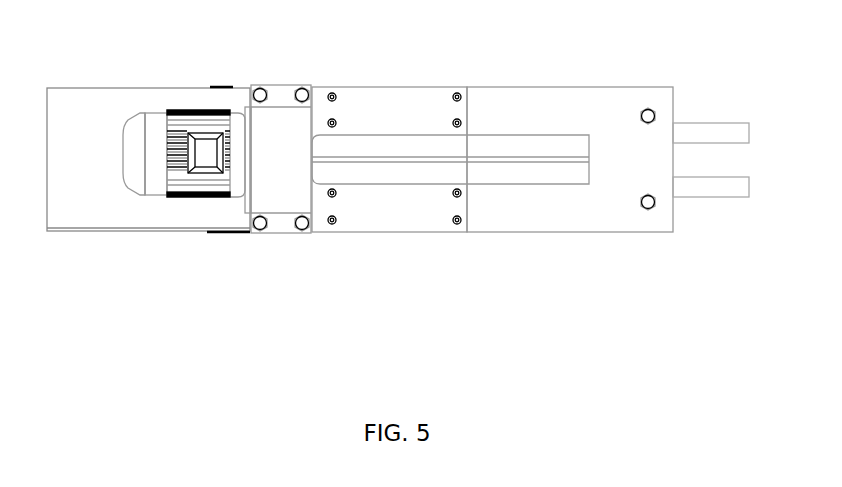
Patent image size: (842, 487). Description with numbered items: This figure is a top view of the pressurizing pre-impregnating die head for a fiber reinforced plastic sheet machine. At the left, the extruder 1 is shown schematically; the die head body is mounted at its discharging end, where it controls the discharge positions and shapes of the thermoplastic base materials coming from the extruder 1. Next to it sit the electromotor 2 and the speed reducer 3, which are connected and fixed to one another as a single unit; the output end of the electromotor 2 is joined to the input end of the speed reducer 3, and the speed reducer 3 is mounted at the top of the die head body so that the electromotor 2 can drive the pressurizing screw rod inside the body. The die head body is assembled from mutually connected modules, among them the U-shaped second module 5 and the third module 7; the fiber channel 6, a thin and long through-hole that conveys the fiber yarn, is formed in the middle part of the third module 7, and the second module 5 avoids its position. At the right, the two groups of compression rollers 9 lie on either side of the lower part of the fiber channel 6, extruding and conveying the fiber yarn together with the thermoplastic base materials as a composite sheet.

The extruder 1 is at (148, 205).
The electromotor 2 is at (204, 114).
The speed reducer 3 is at (314, 124).
The second module 5 is at (389, 124).
The fiber channel 6 is at (474, 100).
The third module 7 is at (570, 124).
The compression roller 9 is at (699, 195).